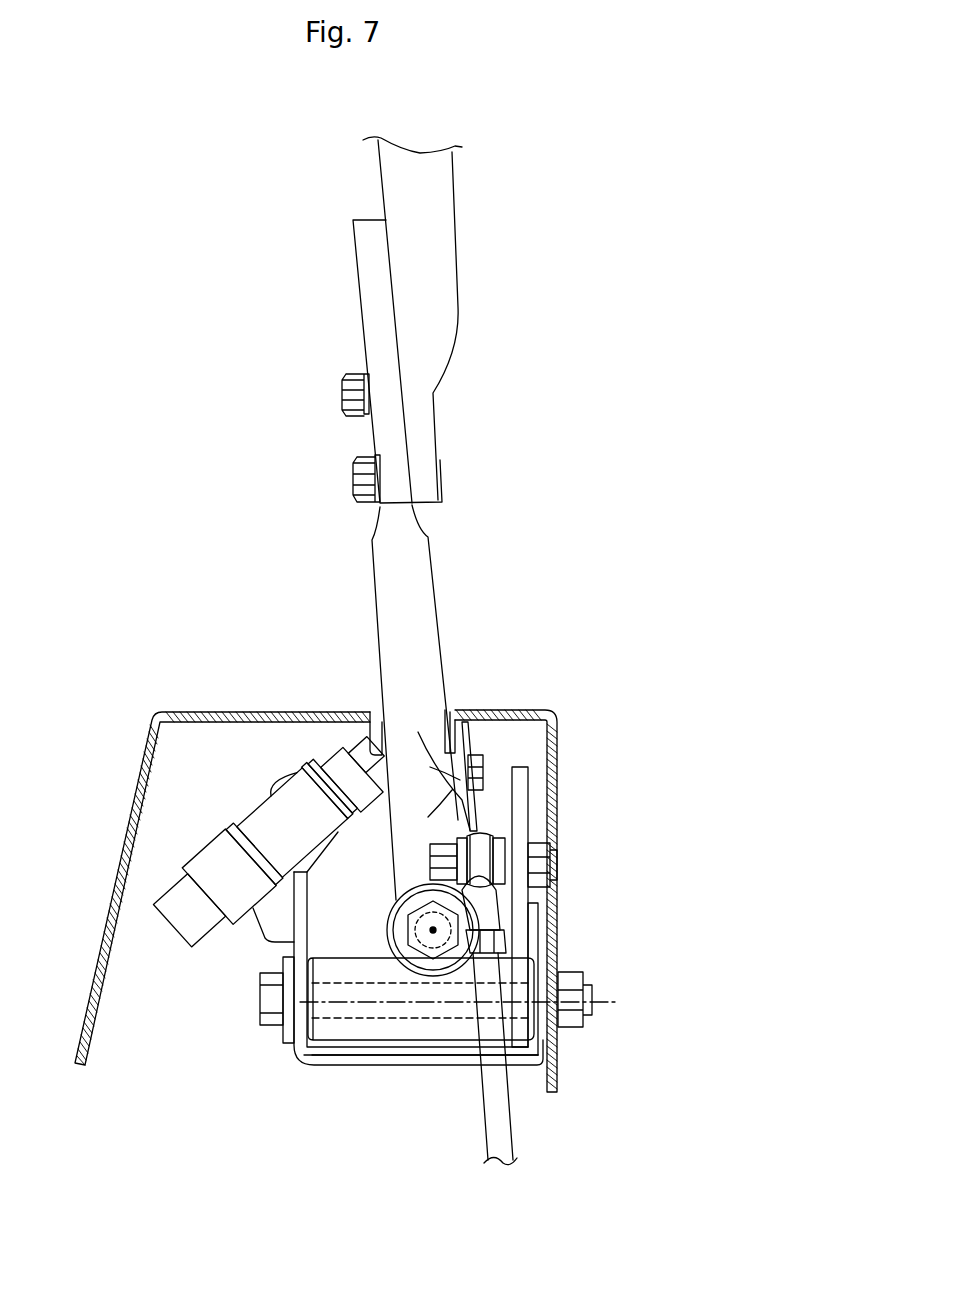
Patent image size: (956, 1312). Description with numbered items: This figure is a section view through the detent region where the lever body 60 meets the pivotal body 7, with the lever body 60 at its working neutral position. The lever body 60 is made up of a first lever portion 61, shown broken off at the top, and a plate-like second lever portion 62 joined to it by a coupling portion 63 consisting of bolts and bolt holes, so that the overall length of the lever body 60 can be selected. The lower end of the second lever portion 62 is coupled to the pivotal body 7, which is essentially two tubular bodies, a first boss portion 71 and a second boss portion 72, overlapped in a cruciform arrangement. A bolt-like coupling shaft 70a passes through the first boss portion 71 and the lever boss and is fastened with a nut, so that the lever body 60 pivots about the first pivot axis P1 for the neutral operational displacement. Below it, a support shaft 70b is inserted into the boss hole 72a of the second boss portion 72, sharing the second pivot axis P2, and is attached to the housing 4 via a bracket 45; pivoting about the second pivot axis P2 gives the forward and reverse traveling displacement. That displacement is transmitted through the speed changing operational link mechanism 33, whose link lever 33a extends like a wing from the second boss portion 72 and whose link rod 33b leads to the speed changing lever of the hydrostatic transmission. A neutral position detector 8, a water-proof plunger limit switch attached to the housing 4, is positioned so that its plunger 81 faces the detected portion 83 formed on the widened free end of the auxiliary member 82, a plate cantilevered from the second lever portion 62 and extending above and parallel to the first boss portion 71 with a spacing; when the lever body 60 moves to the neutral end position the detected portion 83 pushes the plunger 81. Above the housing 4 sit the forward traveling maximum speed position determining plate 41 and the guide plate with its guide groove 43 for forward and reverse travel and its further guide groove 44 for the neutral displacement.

The pivotal body 7 is at (267, 1091).
The housing 4 is at (559, 702).
The neutral position detector 8 is at (227, 858).
The speed changing operational link mechanism 33 is at (483, 822).
The link lever 33a is at (531, 824).
The link rod 33b is at (506, 1145).
The forward traveling maximum speed position determining plate 41 is at (377, 740).
The guide groove 43 is at (445, 686).
The guide groove 44 is at (212, 709).
The bracket 45 is at (454, 1067).
The lever body 60 is at (494, 380).
The first lever portion 61 is at (468, 215).
The second lever portion 62 is at (446, 601).
The coupling portion 63 is at (350, 438).
The coupling shaft 70a is at (383, 931).
The support shaft 70b is at (587, 1020).
The first boss portion 71 is at (371, 948).
The second boss portion 72 is at (408, 1058).
The boss hole 72a is at (390, 1003).
The plunger 81 is at (360, 757).
The auxiliary member 82 is at (474, 732).
The detected portion 83 is at (452, 772).
The first pivot axis P1 is at (430, 928).
The second pivot axis P2 is at (300, 1002).